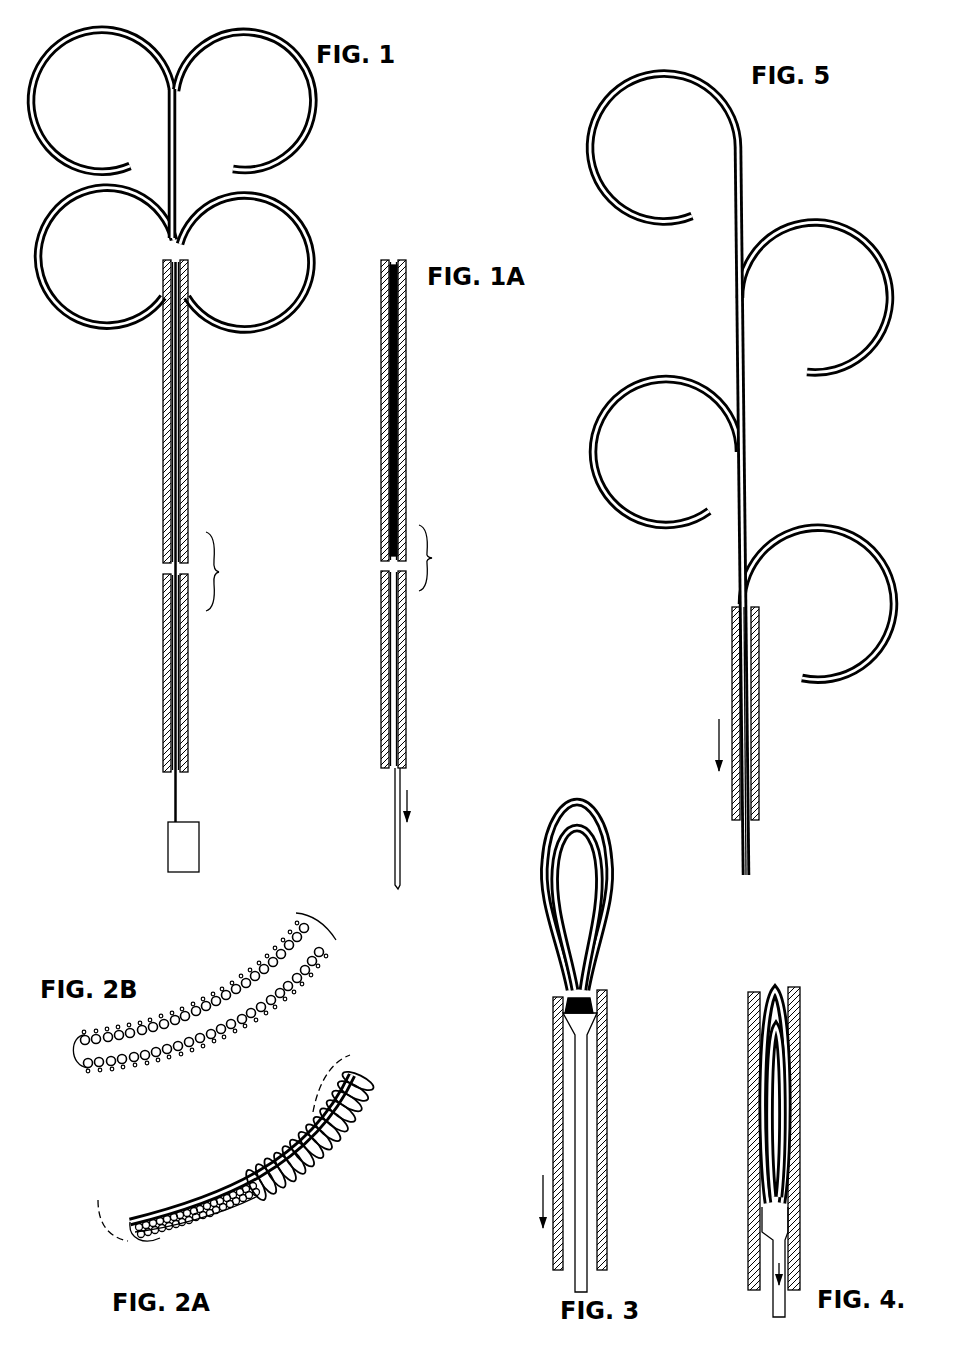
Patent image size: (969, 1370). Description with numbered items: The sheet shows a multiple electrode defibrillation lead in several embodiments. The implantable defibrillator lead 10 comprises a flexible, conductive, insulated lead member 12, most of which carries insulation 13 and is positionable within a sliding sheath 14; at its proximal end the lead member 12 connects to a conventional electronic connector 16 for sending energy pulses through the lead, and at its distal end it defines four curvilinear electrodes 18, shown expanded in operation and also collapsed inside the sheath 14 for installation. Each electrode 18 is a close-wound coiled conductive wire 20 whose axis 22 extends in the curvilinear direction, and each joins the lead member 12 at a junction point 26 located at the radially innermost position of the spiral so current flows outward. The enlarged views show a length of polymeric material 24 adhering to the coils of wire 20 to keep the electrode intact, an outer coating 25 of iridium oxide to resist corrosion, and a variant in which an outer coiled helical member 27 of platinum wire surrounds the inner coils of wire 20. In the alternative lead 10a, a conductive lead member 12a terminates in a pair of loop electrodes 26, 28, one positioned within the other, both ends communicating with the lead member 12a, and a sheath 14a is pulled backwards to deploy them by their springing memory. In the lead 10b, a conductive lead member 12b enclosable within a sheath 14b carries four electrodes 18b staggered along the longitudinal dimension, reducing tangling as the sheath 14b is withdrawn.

In FIG. 1, the implantable defibrillator lead 10 is at (172, 795).
In FIG. 1A, the implantable defibrillator lead 10 is at (378, 622).
In FIG. 3, the lead 10a is at (551, 1092).
In FIG. 4, the lead 10a is at (747, 1093).
In FIG. 5, the defibrillator lead 10b is at (730, 664).
In FIG. 1, the lead member 12 is at (180, 468).
In FIG. 1A, the lead member 12 is at (395, 848).
In FIG. 3, the conductive lead member 12a is at (581, 1128).
In FIG. 4, the conductive lead member 12a is at (779, 1301).
In FIG. 5, the conductive lead member 12b is at (752, 838).
In FIG. 1, the insulation 13 is at (172, 421).
In FIG. 1A, the insulation 13 is at (393, 604).
In FIG. 1, the sliding sheath 14 is at (190, 692).
In FIG. 1A, the sliding sheath 14 is at (405, 648).
In FIG. 3, the sheath 14a is at (607, 1088).
In FIG. 4, the sheath 14a is at (796, 1196).
In FIG. 5, the sheath 14b is at (762, 750).
In FIG. 1, the electronic connector 16 is at (182, 852).
In FIG. 1, the curvilinear electrodes 18 is at (57, 226).
In FIG. 1A, the curvilinear electrodes 18 is at (393, 425).
In FIG. 2A, the curvilinear electrodes 18 is at (318, 1190).
In FIG. 5, the electrodes 18b is at (780, 223).
In FIG. 2B, the coiled conductive metal wire 20 is at (232, 1025).
In FIG. 2A, the coiled conductive metal wire 20 is at (250, 1229).
In FIG. 2A, the axis of the coil 22 is at (107, 1210).
In FIG. 2A, the polymeric material 24 is at (200, 1206).
In FIG. 2A, the outer coating 25 is at (246, 1237).
In FIG. 1, the junction point / loop electrode 26 is at (171, 86).
In FIG. 3, the junction point / loop electrode 26 is at (588, 803).
In FIG. 4, the junction point / loop electrode 26 is at (776, 990).
In FIG. 2B, the outer coiled helical member 27 is at (228, 992).
In FIG. 3, the loop electrode 28 is at (599, 858).
In FIG. 4, the loop electrode 28 is at (778, 1064).